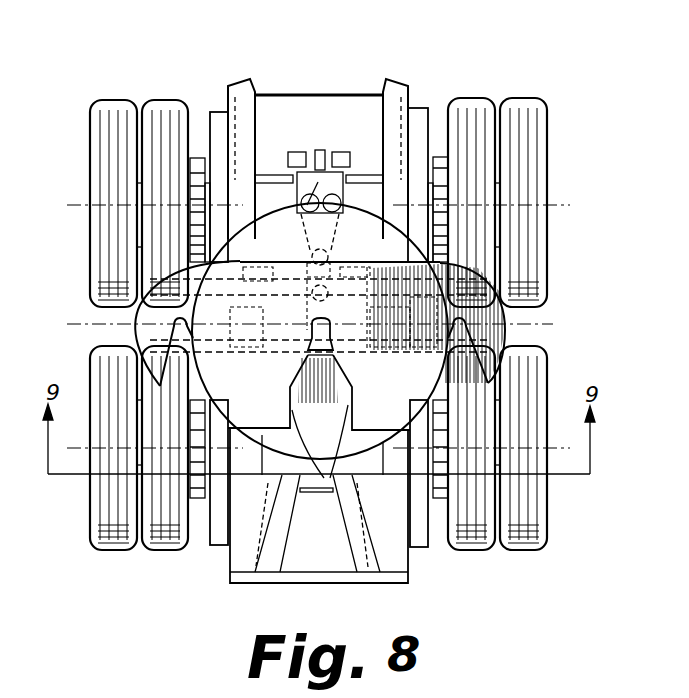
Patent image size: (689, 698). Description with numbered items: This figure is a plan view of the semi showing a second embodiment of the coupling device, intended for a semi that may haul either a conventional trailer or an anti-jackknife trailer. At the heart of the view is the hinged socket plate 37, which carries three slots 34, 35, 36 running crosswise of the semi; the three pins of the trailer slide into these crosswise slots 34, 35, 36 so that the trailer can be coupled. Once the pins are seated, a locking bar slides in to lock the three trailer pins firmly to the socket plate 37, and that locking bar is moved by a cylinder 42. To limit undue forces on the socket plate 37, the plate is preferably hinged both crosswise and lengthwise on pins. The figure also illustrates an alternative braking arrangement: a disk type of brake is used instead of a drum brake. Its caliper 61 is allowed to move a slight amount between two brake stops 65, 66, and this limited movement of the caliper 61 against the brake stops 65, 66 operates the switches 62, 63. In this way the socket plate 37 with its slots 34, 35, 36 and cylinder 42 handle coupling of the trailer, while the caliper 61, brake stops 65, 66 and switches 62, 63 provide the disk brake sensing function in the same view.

The crosswise slot 34 is at (158, 386).
The crosswise slot 35 is at (330, 477).
The crosswise slot 36 is at (488, 357).
The socket plate 37 is at (268, 397).
The cylinder 42 is at (350, 262).
The caliper 61 is at (298, 206).
The switch 62 is at (300, 152).
The switch 63 is at (345, 150).
The brake stop 65 is at (278, 176).
The brake stop 66 is at (367, 174).